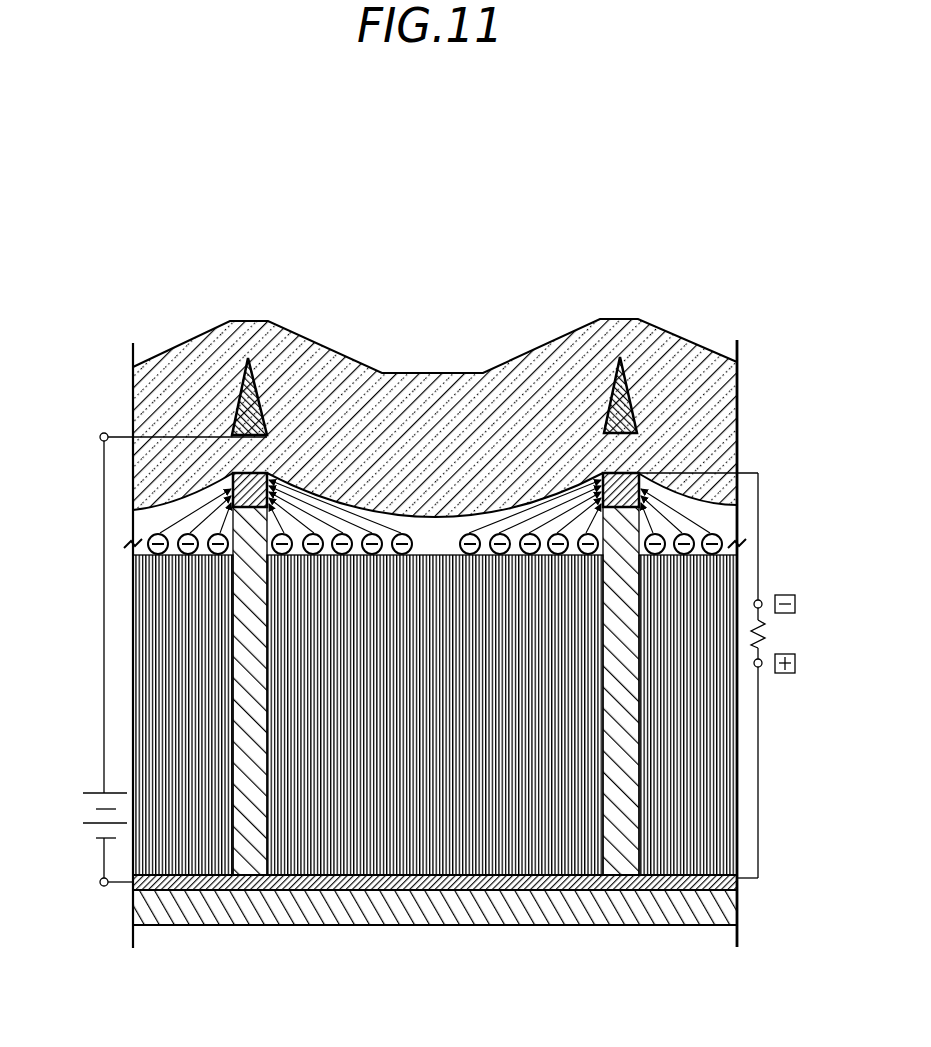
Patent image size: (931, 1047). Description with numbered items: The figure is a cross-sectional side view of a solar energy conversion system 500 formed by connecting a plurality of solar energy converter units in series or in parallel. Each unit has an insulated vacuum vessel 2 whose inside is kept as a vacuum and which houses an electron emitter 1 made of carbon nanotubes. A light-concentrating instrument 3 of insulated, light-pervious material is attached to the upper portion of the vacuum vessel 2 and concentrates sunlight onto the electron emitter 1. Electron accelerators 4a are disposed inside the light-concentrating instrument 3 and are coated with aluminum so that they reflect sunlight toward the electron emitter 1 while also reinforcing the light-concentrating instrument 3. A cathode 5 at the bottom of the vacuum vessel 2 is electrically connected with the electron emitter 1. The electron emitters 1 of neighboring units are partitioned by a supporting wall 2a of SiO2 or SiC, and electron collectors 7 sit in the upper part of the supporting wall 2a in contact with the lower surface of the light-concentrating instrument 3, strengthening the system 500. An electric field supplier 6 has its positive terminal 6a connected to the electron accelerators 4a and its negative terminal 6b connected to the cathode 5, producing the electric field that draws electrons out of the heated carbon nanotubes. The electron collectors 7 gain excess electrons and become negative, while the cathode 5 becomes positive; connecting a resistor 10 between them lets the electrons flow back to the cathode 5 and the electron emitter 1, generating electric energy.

The solar energy conversion system 500 is at (449, 208).
The electron emitter 1 is at (357, 888).
The vacuum vessel 2 is at (427, 902).
The supporting wall 2a is at (250, 868).
The light-concentrating instrument 3 is at (430, 386).
The electron accelerator 4a is at (253, 357).
The cathode 5 is at (493, 880).
The electric field supplier 6 is at (90, 832).
The positive terminal 6a is at (103, 431).
The negative terminal 6b is at (105, 893).
The electron collector 7 is at (270, 472).
The resistor 10 is at (760, 618).